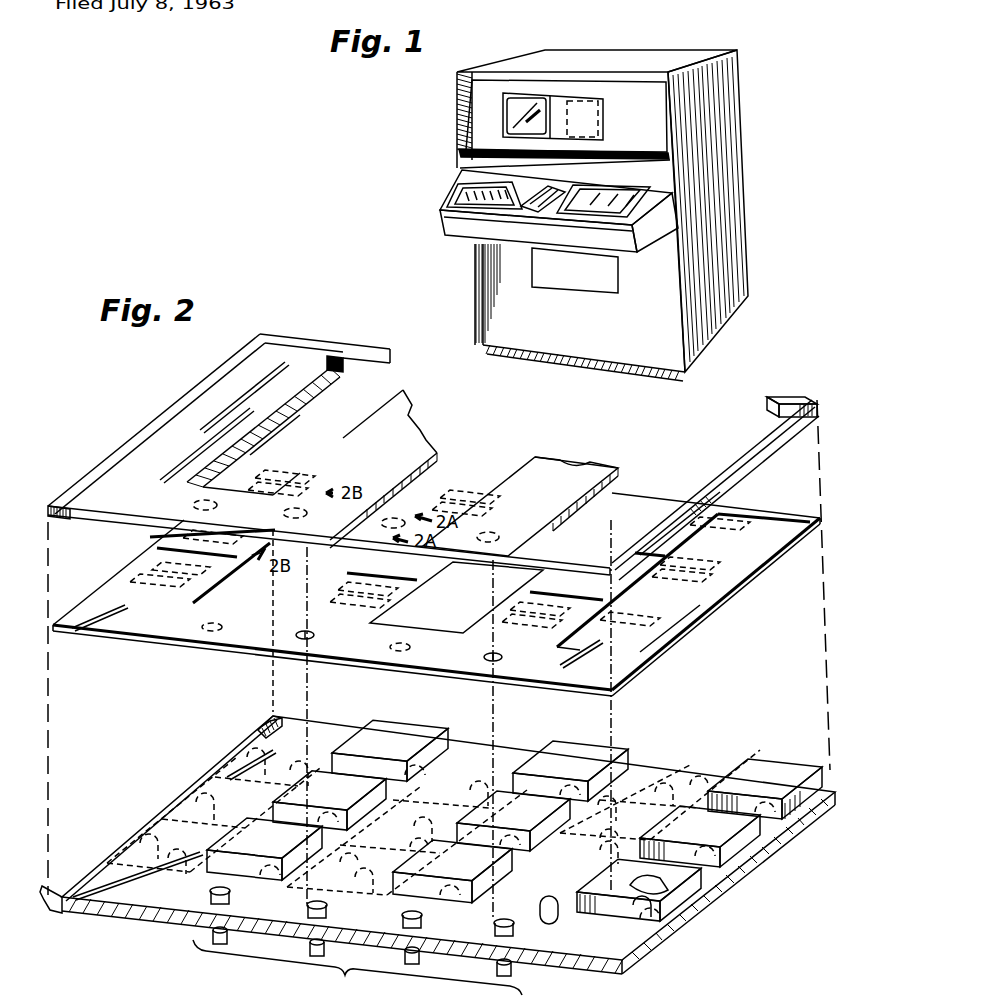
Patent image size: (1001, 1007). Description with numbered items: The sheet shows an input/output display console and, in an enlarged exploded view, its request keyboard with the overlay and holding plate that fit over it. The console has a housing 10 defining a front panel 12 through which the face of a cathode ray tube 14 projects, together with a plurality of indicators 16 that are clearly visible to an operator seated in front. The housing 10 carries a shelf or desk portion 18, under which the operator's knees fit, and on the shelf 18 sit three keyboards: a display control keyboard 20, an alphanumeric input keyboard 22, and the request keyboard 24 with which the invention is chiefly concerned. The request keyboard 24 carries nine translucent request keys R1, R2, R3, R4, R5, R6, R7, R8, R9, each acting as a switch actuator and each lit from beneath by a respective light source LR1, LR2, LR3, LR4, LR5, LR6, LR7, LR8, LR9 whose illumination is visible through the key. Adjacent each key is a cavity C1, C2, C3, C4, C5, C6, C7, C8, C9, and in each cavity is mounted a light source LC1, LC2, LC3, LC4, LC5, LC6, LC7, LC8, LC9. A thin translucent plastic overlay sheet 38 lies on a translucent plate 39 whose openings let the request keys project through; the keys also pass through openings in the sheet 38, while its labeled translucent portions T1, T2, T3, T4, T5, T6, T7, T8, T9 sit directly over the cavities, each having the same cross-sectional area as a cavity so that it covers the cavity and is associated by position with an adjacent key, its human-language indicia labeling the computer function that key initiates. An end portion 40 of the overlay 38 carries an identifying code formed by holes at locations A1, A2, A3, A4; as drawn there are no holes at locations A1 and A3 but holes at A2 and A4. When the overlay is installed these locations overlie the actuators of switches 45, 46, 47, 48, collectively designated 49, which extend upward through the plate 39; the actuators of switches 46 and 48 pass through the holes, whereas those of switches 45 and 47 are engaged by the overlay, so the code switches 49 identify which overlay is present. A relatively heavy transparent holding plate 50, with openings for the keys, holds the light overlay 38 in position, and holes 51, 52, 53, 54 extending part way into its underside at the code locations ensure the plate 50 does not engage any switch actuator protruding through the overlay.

In FIG. 1, the housing 10 is at (707, 46).
In FIG. 1, the front panel 12 is at (472, 137).
In FIG. 1, the cathode ray tube 14 is at (510, 114).
In FIG. 1, the indicators 16 is at (598, 122).
In FIG. 1, the shelf or desk portion 18 is at (428, 229).
In FIG. 1, the display control keyboard 20 is at (458, 195).
In FIG. 1, the alphanumeric input keyboard 22 is at (558, 200).
In FIG. 1, the request keyboard 24 is at (612, 200).
In FIG. 2, the request keyboard 24 is at (727, 730).
In FIG. 2, the overlay sheet 38 is at (743, 608).
In FIG. 2, the translucent plate 39 is at (118, 917).
In FIG. 2, the end portion 40 is at (618, 690).
In FIG. 2, the switch 45 is at (212, 936).
In FIG. 2, the switch 46 is at (308, 948).
In FIG. 2, the switch 47 is at (405, 958).
In FIG. 2, the switch 48 is at (497, 968).
In FIG. 2, the overlay code switches 49 is at (357, 968).
In FIG. 2, the holding plate 50 is at (560, 463).
In FIG. 2, the hole 51 is at (193, 505).
In FIG. 2, the hole 52 is at (283, 513).
In FIG. 2, the hole 53 is at (381, 523).
In FIG. 2, the hole 54 is at (492, 533).
In FIG. 2, the translucent portion T1 is at (258, 477).
In FIG. 2, the translucent portion T2 is at (160, 538).
In FIG. 2, the translucent portion T3 is at (118, 580).
In FIG. 2, the translucent portion T4 is at (430, 505).
In FIG. 2, the translucent portion T5 is at (345, 572).
In FIG. 2, the translucent portion T6 is at (408, 592).
In FIG. 2, the translucent portion T7 is at (716, 525).
In FIG. 2, the translucent portion T8 is at (652, 565).
In FIG. 2, the translucent portion T9 is at (606, 612).
In FIG. 2, the hole location A1 is at (200, 627).
In FIG. 2, the hole location A2 is at (296, 635).
In FIG. 2, the hole location A3 is at (390, 647).
In FIG. 2, the hole location A4 is at (484, 657).
In FIG. 2, the request key R1 is at (347, 754).
In FIG. 2, the request key R2 is at (288, 796).
In FIG. 2, the request key R3 is at (234, 848).
In FIG. 2, the request key R4 is at (537, 777).
In FIG. 2, the request key R5 is at (477, 821).
In FIG. 2, the request key R6 is at (416, 871).
In FIG. 2, the request key R7 is at (731, 792).
In FIG. 2, the request key R8 is at (669, 839).
In FIG. 2, the request key R9 is at (594, 887).
In FIG. 2, the light source LR1 is at (404, 749).
In FIG. 2, the light source LR2 is at (337, 795).
In FIG. 2, the light source LR3 is at (281, 846).
In FIG. 2, the light source LR4 is at (582, 770).
In FIG. 2, the light source LR5 is at (524, 818).
In FIG. 2, the light source LR6 is at (462, 868).
In FIG. 2, the light source LR7 is at (797, 838).
In FIG. 2, the light source LR8 is at (750, 885).
In FIG. 2, the light source LR9 is at (672, 902).
In FIG. 2, the cavity C1 is at (257, 757).
In FIG. 2, the cavity C2 is at (206, 803).
In FIG. 2, the cavity C3 is at (150, 843).
In FIG. 2, the cavity C4 is at (431, 791).
In FIG. 2, the cavity C5 is at (374, 837).
In FIG. 2, the cavity C6 is at (323, 884).
In FIG. 2, the cavity C7 is at (621, 813).
In FIG. 2, the cavity C8 is at (566, 861).
In FIG. 2, the cavity C9 is at (543, 918).
In FIG. 2, the light source LC1 is at (270, 721).
In FIG. 2, the light source LC2 is at (225, 770).
In FIG. 2, the light source LC3 is at (163, 818).
In FIG. 2, the light source LC4 is at (487, 787).
In FIG. 2, the light source LC5 is at (426, 821).
In FIG. 2, the light source LC6 is at (363, 854).
In FIG. 2, the light source LC7 is at (677, 784).
In FIG. 2, the light source LC8 is at (601, 832).
In FIG. 2, the light source LC9 is at (612, 915).